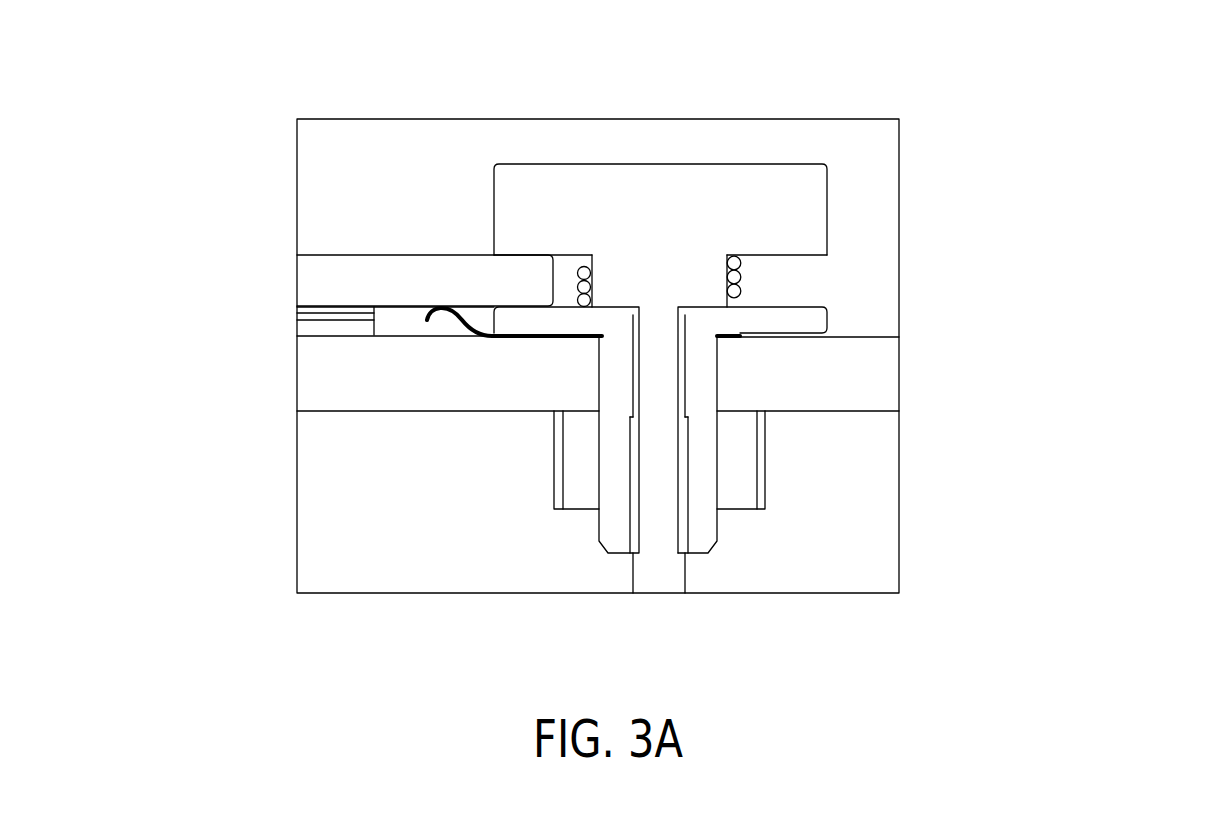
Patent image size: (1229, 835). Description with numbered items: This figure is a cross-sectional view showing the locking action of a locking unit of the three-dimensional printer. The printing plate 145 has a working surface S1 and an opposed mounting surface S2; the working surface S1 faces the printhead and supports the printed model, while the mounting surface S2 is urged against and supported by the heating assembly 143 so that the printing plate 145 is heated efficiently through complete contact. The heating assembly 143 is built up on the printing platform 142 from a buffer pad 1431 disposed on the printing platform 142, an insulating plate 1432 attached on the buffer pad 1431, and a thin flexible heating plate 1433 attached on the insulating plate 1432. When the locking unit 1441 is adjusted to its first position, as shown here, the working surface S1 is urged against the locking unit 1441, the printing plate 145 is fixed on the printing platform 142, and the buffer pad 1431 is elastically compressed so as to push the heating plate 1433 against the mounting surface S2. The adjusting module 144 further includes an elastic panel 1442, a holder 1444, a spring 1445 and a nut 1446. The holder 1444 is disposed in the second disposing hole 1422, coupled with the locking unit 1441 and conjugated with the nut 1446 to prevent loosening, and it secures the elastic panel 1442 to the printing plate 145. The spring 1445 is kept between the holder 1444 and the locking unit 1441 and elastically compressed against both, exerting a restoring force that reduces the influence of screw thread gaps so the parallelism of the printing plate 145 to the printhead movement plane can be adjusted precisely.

The adjusting module 144 is at (1037, 175).
The locking unit 1441 is at (797, 207).
The spring 1445 is at (741, 283).
The holder 1444 is at (797, 322).
The nut 1446 is at (745, 482).
The elastic panel 1442 is at (465, 330).
The second disposing hole 1422 is at (602, 373).
The printing plate 145 is at (342, 273).
The heating assembly 143 is at (268, 306).
The heating plate 1433 is at (305, 308).
The insulating plate 1432 is at (307, 313).
The buffer pad 1431 is at (313, 330).
The printing platform 142 is at (320, 387).
The working surface S1 is at (416, 246).
The mounting surface S2 is at (400, 317).